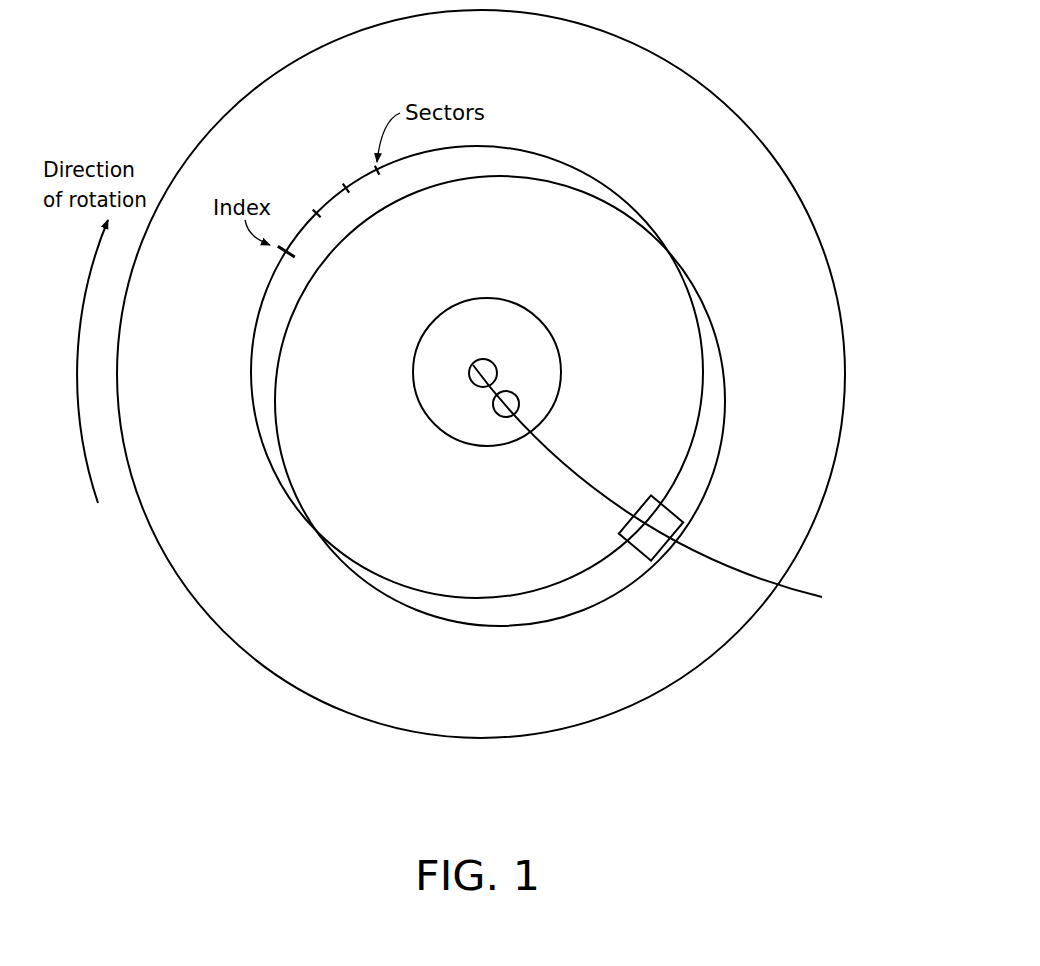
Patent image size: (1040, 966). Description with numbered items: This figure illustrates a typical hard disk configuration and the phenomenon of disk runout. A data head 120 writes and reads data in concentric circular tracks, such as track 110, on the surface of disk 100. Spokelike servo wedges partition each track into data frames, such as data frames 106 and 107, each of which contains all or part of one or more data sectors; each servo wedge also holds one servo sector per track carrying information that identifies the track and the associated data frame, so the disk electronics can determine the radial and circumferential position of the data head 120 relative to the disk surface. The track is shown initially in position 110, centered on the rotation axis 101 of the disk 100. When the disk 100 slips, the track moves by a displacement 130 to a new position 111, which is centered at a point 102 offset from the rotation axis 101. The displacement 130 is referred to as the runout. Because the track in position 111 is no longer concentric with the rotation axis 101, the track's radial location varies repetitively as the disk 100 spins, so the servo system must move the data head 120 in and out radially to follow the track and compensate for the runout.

The disk 100 is at (790, 171).
The rotation axis 101 is at (483, 359).
The point 102 is at (519, 399).
The data frame 106 is at (329, 199).
The data frame 107 is at (362, 174).
The track 110 is at (474, 603).
The position 111 is at (733, 395).
The data head 120 is at (672, 555).
The displacement 130 is at (582, 580).